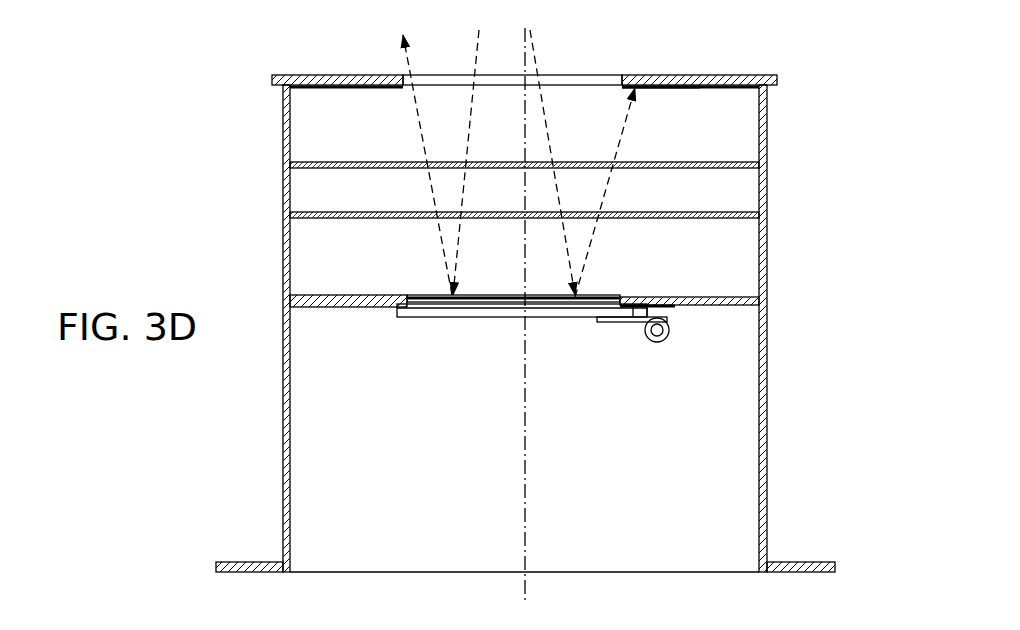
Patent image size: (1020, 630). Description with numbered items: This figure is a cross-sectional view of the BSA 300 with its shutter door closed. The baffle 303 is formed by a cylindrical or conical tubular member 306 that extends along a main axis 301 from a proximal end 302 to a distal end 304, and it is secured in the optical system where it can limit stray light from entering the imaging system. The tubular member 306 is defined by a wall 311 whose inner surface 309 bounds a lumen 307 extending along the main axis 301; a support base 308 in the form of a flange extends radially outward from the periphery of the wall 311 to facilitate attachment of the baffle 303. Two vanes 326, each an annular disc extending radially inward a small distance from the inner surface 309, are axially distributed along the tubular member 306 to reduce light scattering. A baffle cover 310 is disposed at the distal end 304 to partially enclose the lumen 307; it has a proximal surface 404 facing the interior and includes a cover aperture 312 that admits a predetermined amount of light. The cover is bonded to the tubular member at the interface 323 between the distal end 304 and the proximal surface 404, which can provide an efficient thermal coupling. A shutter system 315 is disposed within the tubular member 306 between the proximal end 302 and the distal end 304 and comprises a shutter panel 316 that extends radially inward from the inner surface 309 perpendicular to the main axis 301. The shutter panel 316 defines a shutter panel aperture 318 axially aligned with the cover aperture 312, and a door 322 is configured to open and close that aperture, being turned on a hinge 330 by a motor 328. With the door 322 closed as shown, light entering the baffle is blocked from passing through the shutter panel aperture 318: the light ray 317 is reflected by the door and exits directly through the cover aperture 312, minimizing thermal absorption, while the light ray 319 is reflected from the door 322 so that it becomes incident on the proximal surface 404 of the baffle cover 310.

The BSA 300 is at (92, 175).
The main axis 301 is at (525, 430).
The proximal end 302 is at (850, 550).
The baffle 303 is at (245, 118).
The distal end 304 is at (792, 110).
The tubular member 306 is at (767, 390).
The lumen 307 is at (372, 548).
The support base 308 is at (243, 562).
The inner surface 309 is at (290, 448).
The baffle cover 310 is at (738, 75).
The wall 311 is at (283, 398).
The cover aperture 312 is at (598, 72).
The shutter system 315 is at (372, 370).
The shutter panel 316 is at (663, 297).
The light ray 317 is at (478, 53).
The shutter panel aperture 318 is at (433, 295).
The light ray 319 is at (537, 55).
The door 322 is at (480, 318).
The interface 323 is at (297, 90).
The vanes 326 is at (300, 166).
The motor 328 is at (660, 342).
The hinge 330 is at (607, 322).
The proximal surface 404 is at (655, 90).